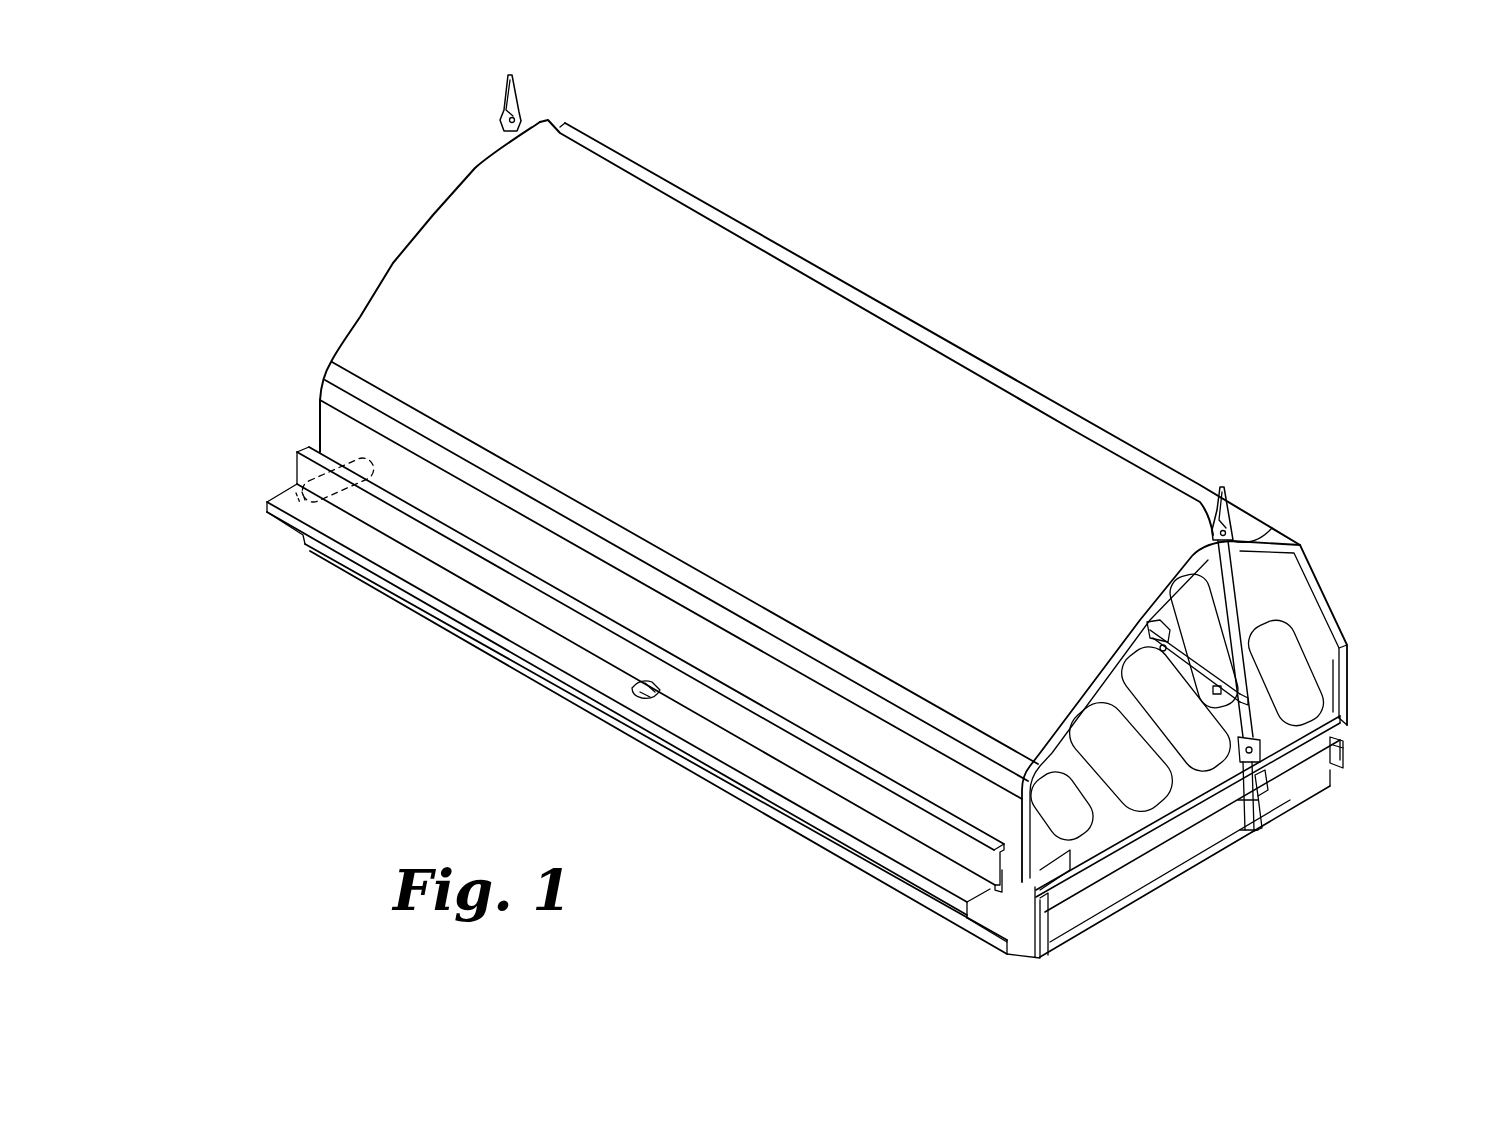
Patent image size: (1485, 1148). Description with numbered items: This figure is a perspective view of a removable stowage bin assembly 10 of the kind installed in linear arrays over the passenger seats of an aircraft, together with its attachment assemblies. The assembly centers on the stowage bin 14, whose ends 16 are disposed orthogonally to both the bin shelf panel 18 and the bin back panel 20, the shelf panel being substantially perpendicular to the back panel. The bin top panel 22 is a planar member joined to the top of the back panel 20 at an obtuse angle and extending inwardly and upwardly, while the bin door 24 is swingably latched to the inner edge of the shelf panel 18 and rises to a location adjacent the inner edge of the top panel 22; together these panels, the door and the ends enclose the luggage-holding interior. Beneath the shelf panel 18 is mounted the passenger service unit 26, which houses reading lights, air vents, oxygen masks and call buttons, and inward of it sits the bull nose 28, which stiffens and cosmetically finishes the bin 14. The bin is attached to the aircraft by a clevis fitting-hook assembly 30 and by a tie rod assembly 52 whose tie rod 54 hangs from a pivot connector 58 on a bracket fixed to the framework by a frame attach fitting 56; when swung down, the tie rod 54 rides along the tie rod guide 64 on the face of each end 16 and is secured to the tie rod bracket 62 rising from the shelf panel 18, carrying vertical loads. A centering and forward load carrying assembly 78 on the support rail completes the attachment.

The removable stowage bin assembly 10 is at (938, 316).
The stowage bin 14 is at (1178, 424).
The ends 16 is at (438, 213).
The bin shelf panel 18 is at (1103, 850).
The bin back panel 20 is at (330, 428).
The bin top panel 22 is at (658, 248).
The bin door 24 is at (1330, 612).
The passenger service unit 26 is at (1077, 910).
The bull nose 28 is at (1328, 770).
The clevis fitting-hook assembly 30 is at (1005, 898).
The tie rod assembly 52 is at (1230, 583).
The tie rod 54 is at (1312, 648).
The frame attach fitting 56 is at (1233, 488).
The pivot connector 58 is at (1270, 532).
The tie rod bracket 62 is at (1262, 782).
The tie rod guide 64 is at (1197, 663).
The centering and forward load carrying assembly 78 is at (640, 691).